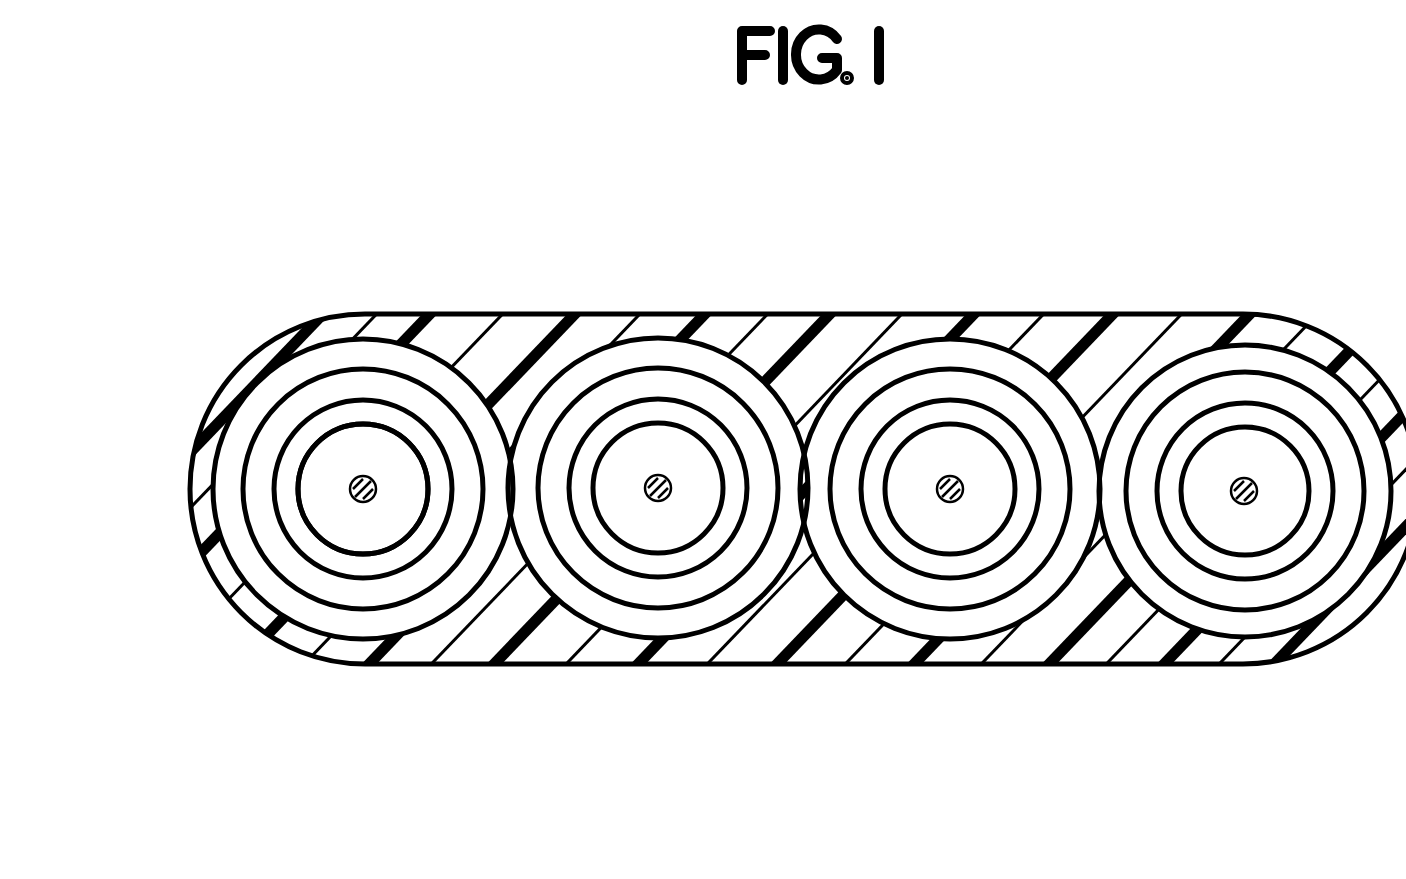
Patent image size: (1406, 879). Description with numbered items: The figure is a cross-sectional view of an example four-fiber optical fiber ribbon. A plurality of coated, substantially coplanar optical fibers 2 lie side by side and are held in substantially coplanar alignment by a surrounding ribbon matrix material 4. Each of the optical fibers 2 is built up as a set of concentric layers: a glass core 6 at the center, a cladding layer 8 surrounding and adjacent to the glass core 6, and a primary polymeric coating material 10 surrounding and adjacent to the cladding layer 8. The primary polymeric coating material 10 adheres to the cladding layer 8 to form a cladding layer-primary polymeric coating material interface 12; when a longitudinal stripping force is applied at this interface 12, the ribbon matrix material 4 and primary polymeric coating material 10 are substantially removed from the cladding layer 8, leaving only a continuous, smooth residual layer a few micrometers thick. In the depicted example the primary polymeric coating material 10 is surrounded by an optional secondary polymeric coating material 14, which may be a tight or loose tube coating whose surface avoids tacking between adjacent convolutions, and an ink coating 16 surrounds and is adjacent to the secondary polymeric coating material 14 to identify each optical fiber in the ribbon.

The optical fiber 2 is at (753, 505).
The ribbon matrix material 4 is at (1112, 364).
The glass core 6 is at (353, 480).
The cladding layer 8 is at (352, 442).
The primary polymeric coating material 10 is at (383, 413).
The cladding layer-primary polymeric coating material interface 12 is at (313, 530).
The secondary polymeric coating material 14 is at (263, 505).
The ink coating 16 is at (457, 390).